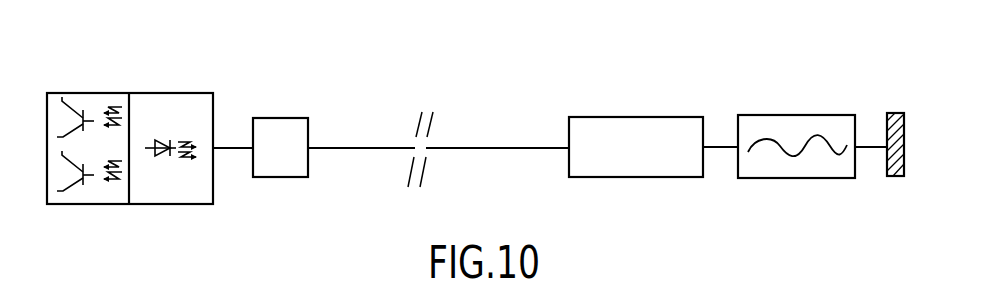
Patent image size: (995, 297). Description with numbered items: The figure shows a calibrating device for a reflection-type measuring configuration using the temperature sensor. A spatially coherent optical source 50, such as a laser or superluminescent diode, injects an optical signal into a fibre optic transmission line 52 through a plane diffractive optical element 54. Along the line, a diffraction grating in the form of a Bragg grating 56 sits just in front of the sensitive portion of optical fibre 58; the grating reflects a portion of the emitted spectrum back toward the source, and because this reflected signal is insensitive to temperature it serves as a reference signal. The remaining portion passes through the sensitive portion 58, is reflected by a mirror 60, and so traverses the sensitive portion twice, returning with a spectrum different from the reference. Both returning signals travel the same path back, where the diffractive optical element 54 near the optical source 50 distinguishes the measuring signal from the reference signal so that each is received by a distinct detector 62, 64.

The spatially coherent optical source 50 is at (171, 92).
The fibre optic transmission line 52 is at (363, 146).
The plane diffractive optical element 54 is at (279, 116).
The Bragg grating 56 is at (632, 115).
The sensitive portion of optical fibre 58 is at (790, 114).
The mirror 60 is at (889, 112).
The detector 62 is at (92, 92).
The detector 64 is at (93, 205).